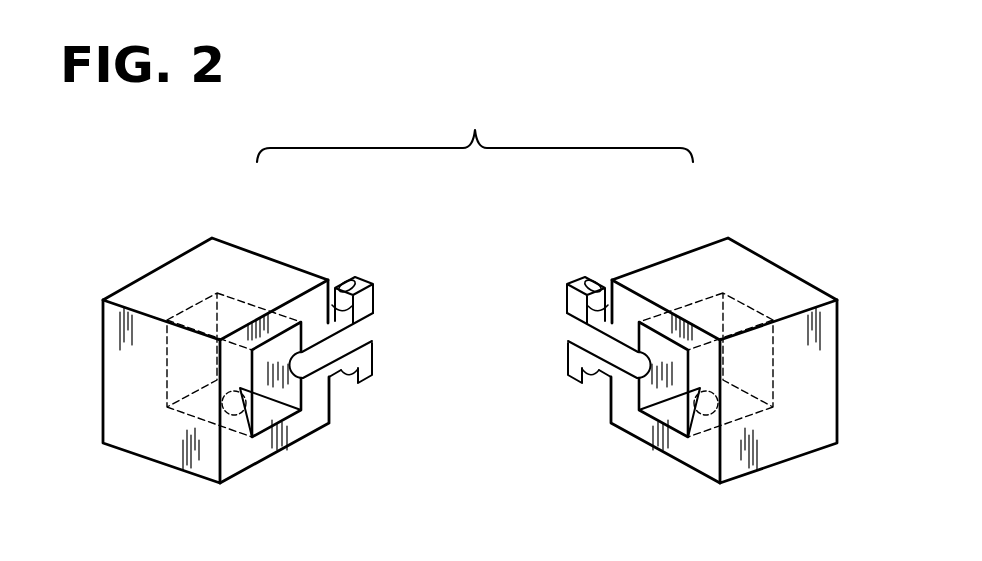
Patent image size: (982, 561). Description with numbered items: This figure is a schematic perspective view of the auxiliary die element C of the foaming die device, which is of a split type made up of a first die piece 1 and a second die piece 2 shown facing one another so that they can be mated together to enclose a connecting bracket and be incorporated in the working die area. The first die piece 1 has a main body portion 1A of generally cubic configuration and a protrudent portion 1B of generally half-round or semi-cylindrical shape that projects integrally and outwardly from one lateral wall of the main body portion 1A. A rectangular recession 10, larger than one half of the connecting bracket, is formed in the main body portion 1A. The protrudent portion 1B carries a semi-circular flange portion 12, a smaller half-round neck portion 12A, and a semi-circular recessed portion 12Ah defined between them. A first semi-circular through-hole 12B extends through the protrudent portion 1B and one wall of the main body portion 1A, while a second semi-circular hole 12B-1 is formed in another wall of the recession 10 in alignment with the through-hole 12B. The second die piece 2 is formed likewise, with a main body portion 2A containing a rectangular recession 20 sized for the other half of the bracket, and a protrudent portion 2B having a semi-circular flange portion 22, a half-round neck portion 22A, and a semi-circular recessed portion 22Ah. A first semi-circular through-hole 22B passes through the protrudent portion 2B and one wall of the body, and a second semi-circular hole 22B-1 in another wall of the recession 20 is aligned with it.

The auxiliary die element C is at (475, 128).
The first die piece 1 is at (166, 258).
The main body portion 1A is at (133, 433).
The protrudent portion 1B is at (402, 362).
The rectangular recession 10 is at (262, 410).
The semi-circular flange portion 12 is at (348, 372).
The half-round neck portion 12A is at (356, 296).
The semi-circular recessed portion 12Ah is at (350, 290).
The first semi-circular through-hole 12B is at (353, 337).
The second semi-circular hole 12B-1 is at (236, 395).
The second die piece 2 is at (776, 253).
The main body portion 2A is at (798, 432).
The protrudent portion 2B is at (634, 250).
The rectangular recession 20 is at (678, 407).
The semi-circular flange portion 22 is at (616, 365).
The half-round neck portion 22A is at (560, 290).
The semi-circular recessed portion 22Ah is at (587, 277).
The first semi-circular through-hole 22B is at (585, 337).
The second semi-circular hole 22B-1 is at (703, 395).